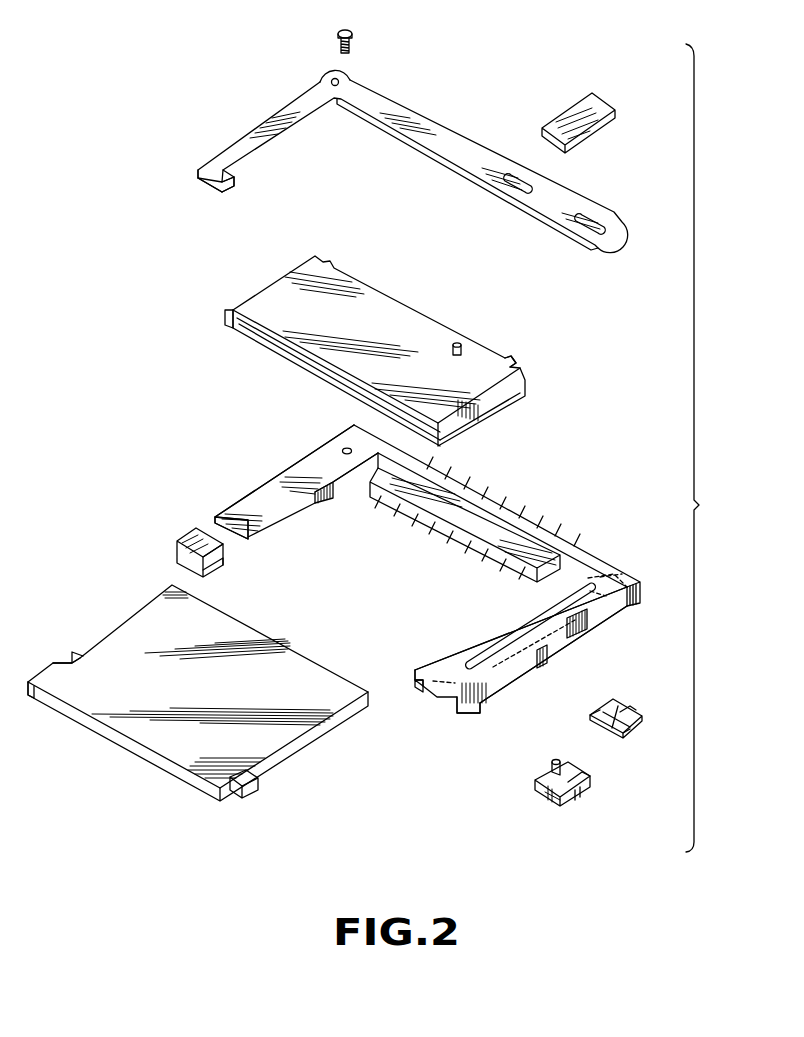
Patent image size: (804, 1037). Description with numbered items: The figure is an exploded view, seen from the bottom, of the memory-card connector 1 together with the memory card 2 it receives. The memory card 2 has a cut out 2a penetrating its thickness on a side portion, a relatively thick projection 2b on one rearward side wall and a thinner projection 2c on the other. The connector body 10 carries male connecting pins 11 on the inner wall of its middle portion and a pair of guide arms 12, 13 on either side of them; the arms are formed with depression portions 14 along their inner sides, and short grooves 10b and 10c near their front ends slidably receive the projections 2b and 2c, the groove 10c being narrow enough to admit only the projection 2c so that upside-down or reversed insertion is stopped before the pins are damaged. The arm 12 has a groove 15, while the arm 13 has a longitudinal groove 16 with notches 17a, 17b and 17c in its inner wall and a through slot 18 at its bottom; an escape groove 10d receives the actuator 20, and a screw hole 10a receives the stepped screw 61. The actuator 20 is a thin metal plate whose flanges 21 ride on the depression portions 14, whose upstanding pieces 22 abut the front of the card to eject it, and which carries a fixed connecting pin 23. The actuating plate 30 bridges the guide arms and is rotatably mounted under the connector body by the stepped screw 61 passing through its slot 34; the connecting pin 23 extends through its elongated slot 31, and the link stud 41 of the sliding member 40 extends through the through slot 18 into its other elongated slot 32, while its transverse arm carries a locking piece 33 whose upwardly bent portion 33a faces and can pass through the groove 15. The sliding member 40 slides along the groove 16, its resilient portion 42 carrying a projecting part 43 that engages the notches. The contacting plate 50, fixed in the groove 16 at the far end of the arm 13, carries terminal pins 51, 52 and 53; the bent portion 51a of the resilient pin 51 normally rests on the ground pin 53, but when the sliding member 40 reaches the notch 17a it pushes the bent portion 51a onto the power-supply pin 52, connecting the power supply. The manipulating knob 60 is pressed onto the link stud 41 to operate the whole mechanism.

The memory-card connector 1 is at (699, 448).
The memory card 2 is at (127, 755).
The cut out 2a is at (70, 659).
The projection 2b is at (249, 797).
The projection 2c is at (32, 688).
The connector body 10 is at (313, 460).
The screw hole 10a is at (346, 447).
The groove 10b is at (414, 676).
The groove 10c is at (222, 566).
The escape groove 10d is at (496, 496).
The male connecting pins 11 is at (456, 546).
The guide arm 12 is at (263, 493).
The guide arm 13 is at (604, 620).
The depression portions 14 is at (200, 572).
The groove 15 is at (232, 543).
The groove 16 is at (455, 710).
The notch 17a is at (608, 603).
The notch 17b is at (564, 634).
The notch 17c is at (497, 675).
The through slot 18 is at (516, 645).
The actuator 20 is at (370, 297).
The flanges 21 is at (227, 328).
The upstanding pieces 22 is at (522, 380).
The connecting pin 23 is at (462, 345).
The actuating plate 30 is at (566, 195).
The elongated slot 31 is at (517, 188).
The elongated slot 32 is at (587, 228).
The locking piece 33 is at (213, 181).
The bent portion 33a is at (233, 190).
The slot 34 is at (339, 80).
The sliding member 40 is at (561, 806).
The link stud 41 is at (541, 794).
The resilient portion 42 is at (590, 789).
The projecting part 43 is at (585, 799).
The contacting plate 50 is at (626, 713).
The terminal pin 51 is at (614, 730).
The bent portion 51a is at (603, 719).
The terminal pin 52 is at (628, 736).
The terminal pin 53 is at (636, 727).
The manipulating knob 60 is at (600, 110).
The stepped screw 61 is at (348, 33).